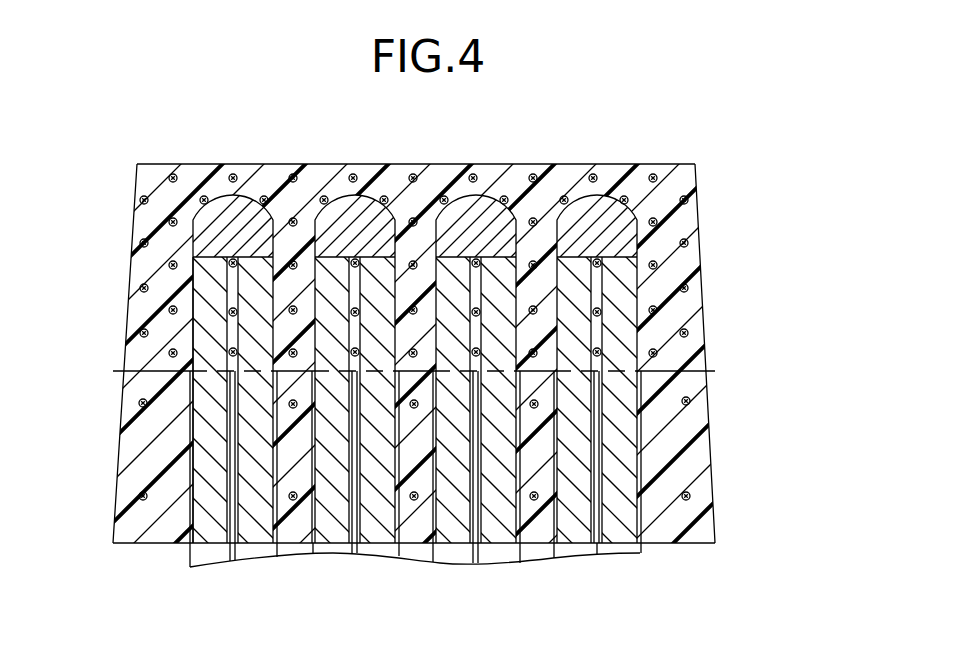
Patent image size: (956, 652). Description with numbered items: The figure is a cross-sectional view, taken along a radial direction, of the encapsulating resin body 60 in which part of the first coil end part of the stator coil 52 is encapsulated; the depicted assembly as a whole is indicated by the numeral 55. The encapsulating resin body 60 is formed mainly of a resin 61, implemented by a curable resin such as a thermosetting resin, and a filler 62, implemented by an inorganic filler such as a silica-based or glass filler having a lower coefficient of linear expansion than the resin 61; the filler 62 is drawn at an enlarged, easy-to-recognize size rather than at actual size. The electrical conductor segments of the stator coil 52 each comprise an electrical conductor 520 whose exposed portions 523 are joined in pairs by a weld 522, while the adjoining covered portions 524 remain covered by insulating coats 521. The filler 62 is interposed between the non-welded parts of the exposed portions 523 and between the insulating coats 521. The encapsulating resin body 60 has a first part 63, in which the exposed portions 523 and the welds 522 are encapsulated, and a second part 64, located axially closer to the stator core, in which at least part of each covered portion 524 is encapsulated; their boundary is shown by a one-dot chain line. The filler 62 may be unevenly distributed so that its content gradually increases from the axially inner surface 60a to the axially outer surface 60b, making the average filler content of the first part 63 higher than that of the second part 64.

The stator 55 is at (717, 157).
The encapsulating resin body 60 is at (776, 302).
The axially inner surface 60a is at (668, 545).
The axially outer surface 60b is at (388, 163).
The resin 61 is at (150, 183).
The filler 62 is at (655, 176).
The first part 63 is at (704, 322).
The second part 64 is at (708, 406).
The stator coil 52 is at (190, 567).
The electrical conductor 520 is at (558, 278).
The insulating coat 521 is at (639, 463).
The weld 522 is at (222, 213).
The exposed portion 523 is at (192, 300).
The covered portion 524 is at (192, 423).